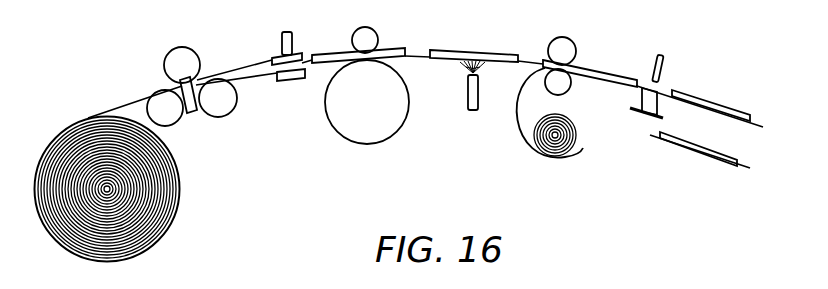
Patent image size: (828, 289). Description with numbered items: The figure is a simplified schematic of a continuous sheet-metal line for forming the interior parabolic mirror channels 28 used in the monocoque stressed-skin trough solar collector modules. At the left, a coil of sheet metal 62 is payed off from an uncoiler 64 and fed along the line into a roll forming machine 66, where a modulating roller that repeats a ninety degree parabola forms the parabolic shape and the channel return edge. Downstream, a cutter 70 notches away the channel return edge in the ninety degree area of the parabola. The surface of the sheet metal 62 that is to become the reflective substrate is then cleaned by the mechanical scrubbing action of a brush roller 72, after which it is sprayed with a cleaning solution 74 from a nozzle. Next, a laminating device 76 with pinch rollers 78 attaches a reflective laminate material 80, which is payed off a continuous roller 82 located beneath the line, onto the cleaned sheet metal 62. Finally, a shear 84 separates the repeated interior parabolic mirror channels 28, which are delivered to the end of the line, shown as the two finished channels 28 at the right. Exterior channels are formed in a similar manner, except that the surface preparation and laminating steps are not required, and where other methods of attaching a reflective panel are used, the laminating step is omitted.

The interior parabolic mirror channel 28 is at (735, 98).
The sheet metal 62 is at (128, 100).
The uncoiler 64 is at (110, 203).
The roll forming machine 66 is at (157, 68).
The cutter 70 is at (270, 47).
The brush roller 72 is at (413, 22).
The cleaning solution 74 is at (462, 76).
The laminating device 76 is at (588, 60).
The pinch rollers 78 is at (560, 51).
The reflective laminate material 80 is at (517, 116).
The continuous roller 82 is at (558, 140).
The shear 84 is at (660, 69).